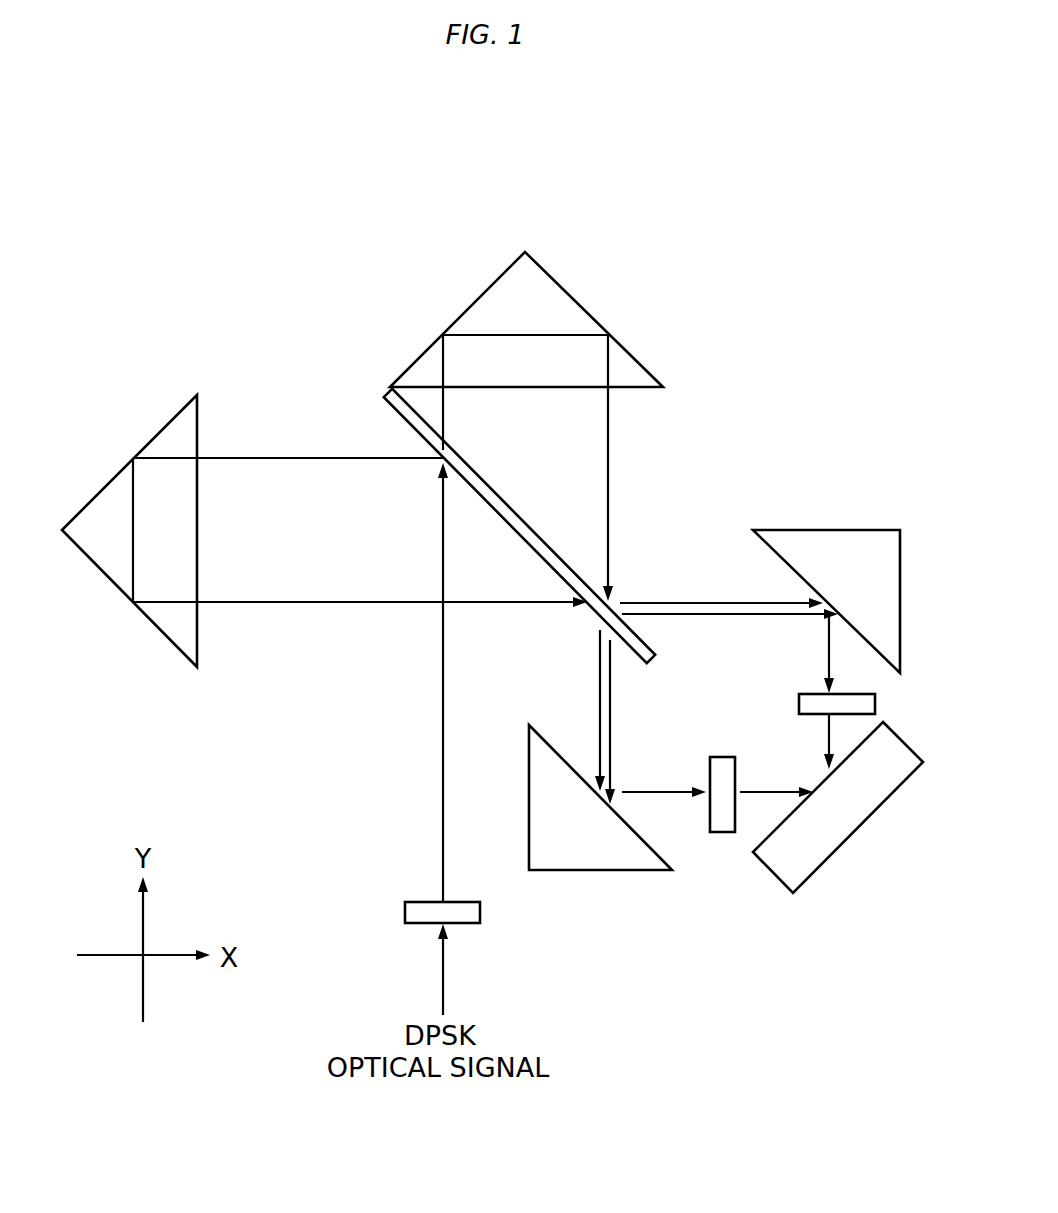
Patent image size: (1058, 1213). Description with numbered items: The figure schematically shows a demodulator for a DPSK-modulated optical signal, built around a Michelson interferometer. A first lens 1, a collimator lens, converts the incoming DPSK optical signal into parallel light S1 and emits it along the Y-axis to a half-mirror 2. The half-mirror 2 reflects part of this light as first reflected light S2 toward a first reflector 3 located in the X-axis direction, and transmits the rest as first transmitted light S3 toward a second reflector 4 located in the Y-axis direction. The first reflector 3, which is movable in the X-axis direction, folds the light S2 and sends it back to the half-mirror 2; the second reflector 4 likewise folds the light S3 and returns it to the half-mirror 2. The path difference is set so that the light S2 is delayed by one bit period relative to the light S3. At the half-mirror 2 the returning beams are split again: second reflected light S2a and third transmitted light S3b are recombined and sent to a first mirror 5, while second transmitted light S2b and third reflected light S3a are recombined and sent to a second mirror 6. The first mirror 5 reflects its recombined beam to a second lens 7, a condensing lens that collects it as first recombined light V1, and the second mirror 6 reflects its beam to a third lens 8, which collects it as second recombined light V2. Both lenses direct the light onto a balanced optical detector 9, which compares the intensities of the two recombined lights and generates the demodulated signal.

The first lens 1 is at (482, 910).
The half-mirror 2 is at (510, 512).
The first reflector 3 is at (198, 646).
The second reflector 4 is at (580, 310).
The first mirror 5 is at (622, 872).
The second mirror 6 is at (862, 530).
The second lens 7 is at (722, 833).
The third lens 8 is at (876, 701).
The balanced optical detector 9 is at (868, 815).
The parallel light S1 is at (443, 752).
The first reflected light S2 is at (318, 460).
The first transmitted light S3 is at (610, 436).
The second reflected light S2a is at (599, 680).
The second transmitted light S2b is at (696, 616).
The third reflected light S3a is at (666, 601).
The third transmitted light S3b is at (612, 718).
The first recombined light V1 is at (656, 795).
The second recombined light V2 is at (829, 652).